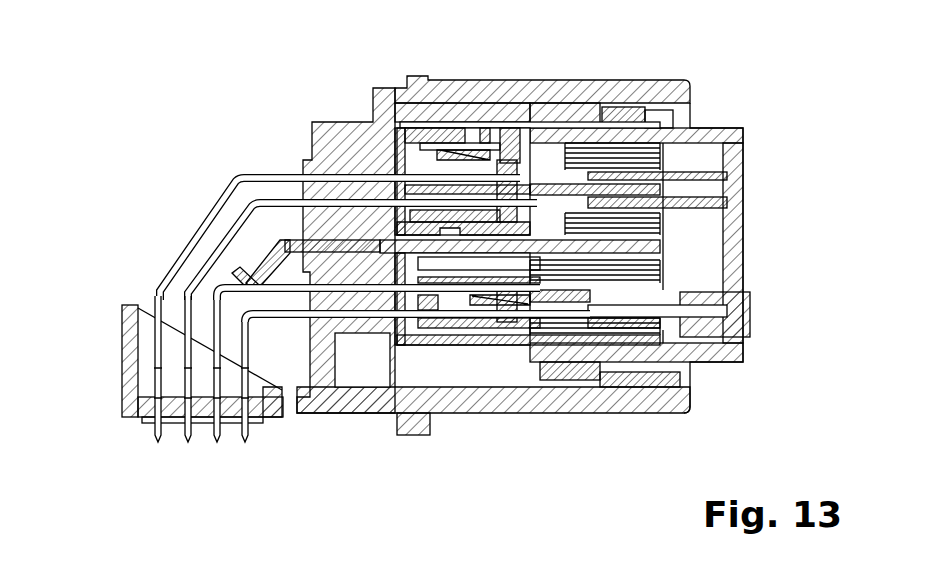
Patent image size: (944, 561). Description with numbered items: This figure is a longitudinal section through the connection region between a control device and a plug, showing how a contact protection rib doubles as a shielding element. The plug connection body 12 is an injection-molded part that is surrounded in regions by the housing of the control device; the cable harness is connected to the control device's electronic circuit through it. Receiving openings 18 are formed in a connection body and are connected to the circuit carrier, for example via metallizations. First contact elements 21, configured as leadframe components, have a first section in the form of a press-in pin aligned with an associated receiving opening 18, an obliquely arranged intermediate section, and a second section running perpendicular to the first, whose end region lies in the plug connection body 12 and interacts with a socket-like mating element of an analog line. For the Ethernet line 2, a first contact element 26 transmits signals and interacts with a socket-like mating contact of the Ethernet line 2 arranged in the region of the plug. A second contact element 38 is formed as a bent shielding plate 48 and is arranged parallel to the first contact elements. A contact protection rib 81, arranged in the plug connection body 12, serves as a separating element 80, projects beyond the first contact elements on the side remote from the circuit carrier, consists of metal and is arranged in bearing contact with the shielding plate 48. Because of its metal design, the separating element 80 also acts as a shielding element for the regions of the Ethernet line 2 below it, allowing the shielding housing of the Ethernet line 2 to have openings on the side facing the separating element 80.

The plug connection body 12 is at (633, 97).
The Ethernet line 2 is at (750, 297).
The first contact elements 21 is at (215, 246).
The second contact element 38 is at (207, 334).
The shielding plate 48 is at (284, 292).
The first contact element 26 is at (263, 423).
The receiving openings 18 is at (187, 444).
The separating element 80 is at (306, 183).
The contact protection rib 81 is at (372, 243).